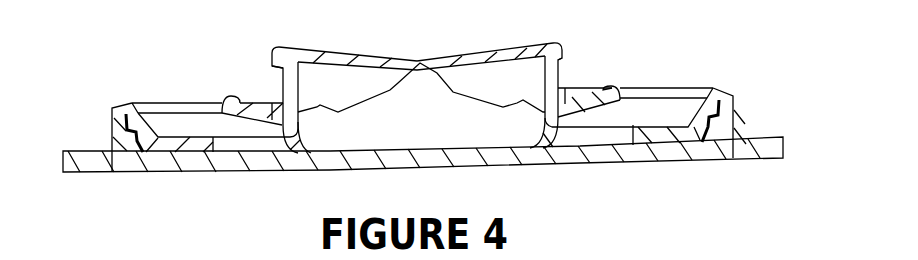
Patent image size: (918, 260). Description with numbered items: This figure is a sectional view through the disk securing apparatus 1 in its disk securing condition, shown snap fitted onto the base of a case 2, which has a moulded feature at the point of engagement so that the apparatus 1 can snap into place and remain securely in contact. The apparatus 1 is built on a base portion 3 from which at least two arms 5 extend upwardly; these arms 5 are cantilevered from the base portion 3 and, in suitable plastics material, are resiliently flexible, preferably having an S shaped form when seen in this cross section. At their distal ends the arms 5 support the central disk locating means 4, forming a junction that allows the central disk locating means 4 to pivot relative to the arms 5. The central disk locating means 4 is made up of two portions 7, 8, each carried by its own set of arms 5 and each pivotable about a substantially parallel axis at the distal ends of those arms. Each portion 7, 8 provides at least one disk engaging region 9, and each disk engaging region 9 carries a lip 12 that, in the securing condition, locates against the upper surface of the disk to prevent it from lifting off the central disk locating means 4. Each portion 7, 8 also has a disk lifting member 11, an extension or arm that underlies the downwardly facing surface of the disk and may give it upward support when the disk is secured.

The apparatus 1 is at (683, 63).
The case 2 is at (730, 150).
The base portion 3 is at (173, 142).
The central disk locating means 4 is at (578, 60).
The arms 5 is at (303, 137).
The portion of the central disk locating means 7 is at (333, 48).
The portion of the central disk locating means 8 is at (520, 42).
The disk engaging region 9 is at (272, 82).
The disk lifting member 11 is at (223, 98).
The lip 12 is at (570, 62).